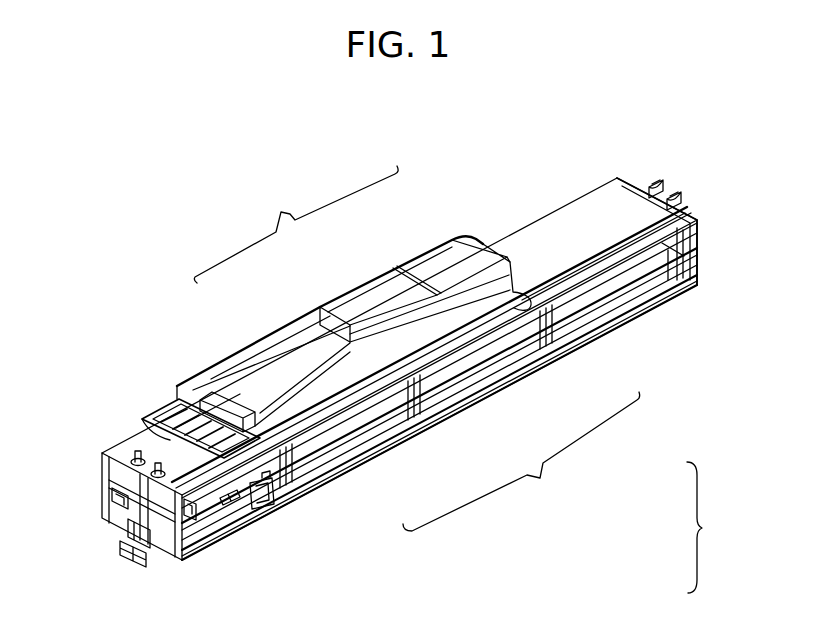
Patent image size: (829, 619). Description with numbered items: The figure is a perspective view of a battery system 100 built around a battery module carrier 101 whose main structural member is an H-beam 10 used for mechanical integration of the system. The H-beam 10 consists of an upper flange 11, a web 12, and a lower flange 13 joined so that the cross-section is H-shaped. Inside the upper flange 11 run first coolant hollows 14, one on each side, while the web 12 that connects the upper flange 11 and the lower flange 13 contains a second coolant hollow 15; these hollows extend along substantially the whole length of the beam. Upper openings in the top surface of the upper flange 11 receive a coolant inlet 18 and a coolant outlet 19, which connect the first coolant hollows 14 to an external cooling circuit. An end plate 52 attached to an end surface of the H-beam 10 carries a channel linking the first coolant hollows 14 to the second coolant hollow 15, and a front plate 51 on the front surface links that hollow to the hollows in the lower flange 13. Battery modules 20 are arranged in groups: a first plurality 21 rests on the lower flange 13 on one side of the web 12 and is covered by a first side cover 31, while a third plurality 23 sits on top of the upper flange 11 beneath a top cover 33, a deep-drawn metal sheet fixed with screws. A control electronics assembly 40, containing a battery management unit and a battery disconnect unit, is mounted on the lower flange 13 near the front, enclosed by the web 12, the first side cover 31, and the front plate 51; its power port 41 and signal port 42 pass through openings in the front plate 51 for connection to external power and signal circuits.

The battery system 100 is at (141, 268).
The H-beam 10 is at (635, 321).
The upper flange 11 is at (678, 220).
The web 12 is at (138, 490).
The lower flange 13 is at (677, 283).
The first coolant hollows 14 is at (664, 564).
The second coolant hollow 15 is at (664, 587).
The coolant inlet 18 is at (115, 445).
The coolant outlet 19 is at (187, 503).
The battery modules 20 is at (257, 348).
The first plurality of battery modules 21 is at (521, 461).
The third plurality of battery modules 23 is at (296, 224).
The first side cover 31 is at (688, 265).
The top cover 33 is at (440, 250).
The control electronics assembly 40 is at (275, 508).
The power port 41 is at (120, 545).
The signal port 42 is at (107, 498).
The front plate 51 is at (128, 518).
The end plate 52 is at (700, 233).
The battery module carrier 101 is at (715, 527).